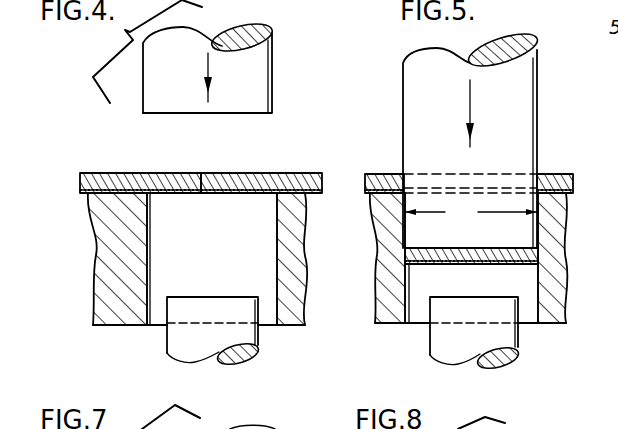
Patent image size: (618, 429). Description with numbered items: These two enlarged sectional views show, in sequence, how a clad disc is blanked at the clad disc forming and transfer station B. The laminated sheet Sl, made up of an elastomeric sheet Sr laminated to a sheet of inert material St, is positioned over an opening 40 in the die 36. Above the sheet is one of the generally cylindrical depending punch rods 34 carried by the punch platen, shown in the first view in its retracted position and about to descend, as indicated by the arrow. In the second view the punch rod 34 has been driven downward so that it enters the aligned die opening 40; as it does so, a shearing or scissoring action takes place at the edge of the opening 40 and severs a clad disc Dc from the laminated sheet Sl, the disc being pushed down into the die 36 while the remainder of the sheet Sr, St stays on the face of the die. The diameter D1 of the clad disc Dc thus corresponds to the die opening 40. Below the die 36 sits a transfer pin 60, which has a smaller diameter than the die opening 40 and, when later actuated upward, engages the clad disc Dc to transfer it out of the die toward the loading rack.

In FIG. 4, the punch rod 34 is at (262, 90).
In FIG. 5, the punch rod 34 is at (527, 90).
In FIG. 4, the die 36 is at (107, 307).
In FIG. 5, the die 36 is at (383, 277).
In FIG. 4, the die opening 40 is at (148, 247).
In FIG. 5, the die opening 40 is at (535, 289).
In FIG. 4, the transfer pin 60 is at (178, 341).
In FIG. 5, the transfer pin 60 is at (507, 340).
In FIG. 4, the clad disc forming and transfer station B is at (172, 267).
In FIG. 5, the clad disc forming and transfer station B is at (449, 275).
In FIG. 4, the laminated sheet Sl is at (117, 152).
In FIG. 5, the laminated sheet Sl is at (577, 150).
In FIG. 4, the elastomeric sheet Sr is at (303, 173).
In FIG. 5, the elastomeric sheet Sr is at (380, 174).
In FIG. 4, the sheet of inert material St is at (181, 171).
In FIG. 5, the sheet of inert material St is at (454, 183).
In FIG. 5, the diameter of the clad disc D1 is at (471, 221).
In FIG. 5, the clad disc Dc is at (512, 246).